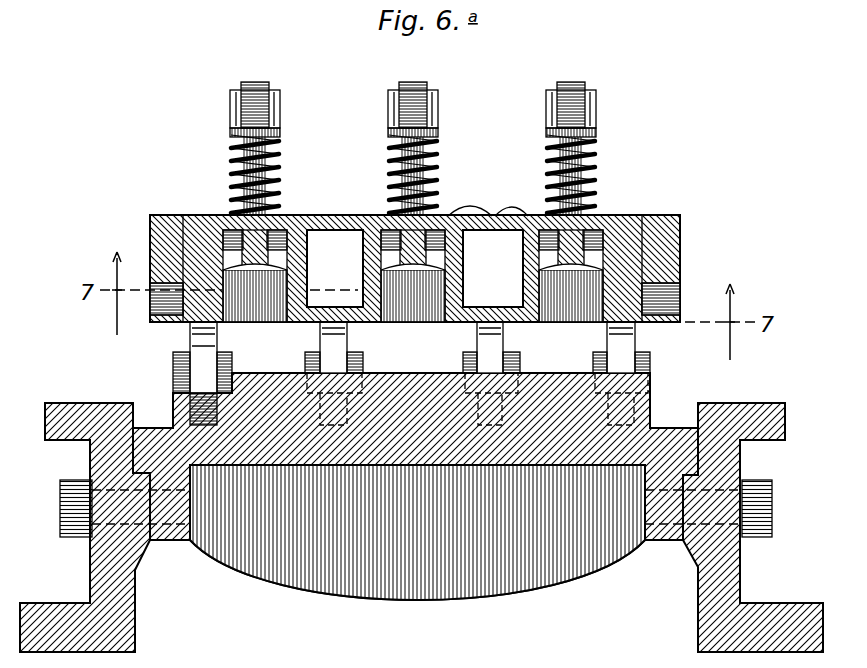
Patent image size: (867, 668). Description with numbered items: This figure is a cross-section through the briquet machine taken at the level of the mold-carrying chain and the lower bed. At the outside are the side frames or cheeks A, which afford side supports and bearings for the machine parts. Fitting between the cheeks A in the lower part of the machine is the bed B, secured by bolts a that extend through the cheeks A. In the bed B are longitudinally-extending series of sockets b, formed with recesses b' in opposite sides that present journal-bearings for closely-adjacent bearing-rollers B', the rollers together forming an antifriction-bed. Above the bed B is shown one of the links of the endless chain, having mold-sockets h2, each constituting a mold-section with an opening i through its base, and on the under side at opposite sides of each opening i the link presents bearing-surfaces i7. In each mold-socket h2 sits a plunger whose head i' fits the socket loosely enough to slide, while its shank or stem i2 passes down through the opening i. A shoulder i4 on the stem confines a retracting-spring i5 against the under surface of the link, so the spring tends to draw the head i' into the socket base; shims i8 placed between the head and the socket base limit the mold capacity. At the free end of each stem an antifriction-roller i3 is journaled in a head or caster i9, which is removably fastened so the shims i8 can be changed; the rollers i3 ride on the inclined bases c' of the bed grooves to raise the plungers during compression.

The side frames or cheeks A is at (72, 404).
The bolts a is at (66, 493).
The bed B is at (417, 486).
The bearing-rollers B' is at (412, 357).
The sockets b is at (411, 428).
The recesses b' is at (228, 383).
The bases of the recesses c' is at (641, 658).
The mold-sockets h2 is at (702, 230).
The openings i is at (415, 268).
The plunger head i' is at (413, 276).
The plunger shank or stem i2 is at (553, 173).
The antifriction-roller i3 is at (255, 82).
The shoulder i4 is at (547, 128).
The retracting-spring i5 is at (397, 193).
The bearing-surfaces i7 is at (203, 218).
The shims i8 is at (488, 197).
The heads or casters i9 is at (393, 147).